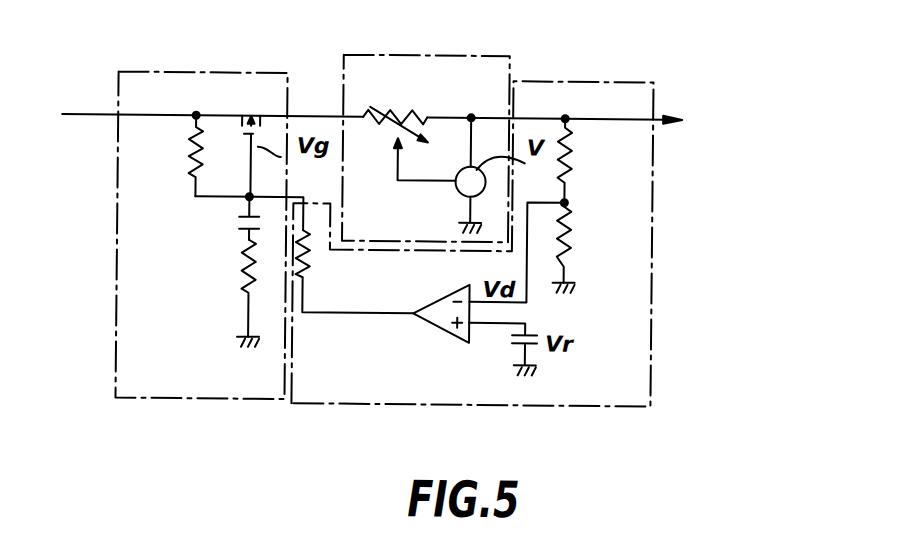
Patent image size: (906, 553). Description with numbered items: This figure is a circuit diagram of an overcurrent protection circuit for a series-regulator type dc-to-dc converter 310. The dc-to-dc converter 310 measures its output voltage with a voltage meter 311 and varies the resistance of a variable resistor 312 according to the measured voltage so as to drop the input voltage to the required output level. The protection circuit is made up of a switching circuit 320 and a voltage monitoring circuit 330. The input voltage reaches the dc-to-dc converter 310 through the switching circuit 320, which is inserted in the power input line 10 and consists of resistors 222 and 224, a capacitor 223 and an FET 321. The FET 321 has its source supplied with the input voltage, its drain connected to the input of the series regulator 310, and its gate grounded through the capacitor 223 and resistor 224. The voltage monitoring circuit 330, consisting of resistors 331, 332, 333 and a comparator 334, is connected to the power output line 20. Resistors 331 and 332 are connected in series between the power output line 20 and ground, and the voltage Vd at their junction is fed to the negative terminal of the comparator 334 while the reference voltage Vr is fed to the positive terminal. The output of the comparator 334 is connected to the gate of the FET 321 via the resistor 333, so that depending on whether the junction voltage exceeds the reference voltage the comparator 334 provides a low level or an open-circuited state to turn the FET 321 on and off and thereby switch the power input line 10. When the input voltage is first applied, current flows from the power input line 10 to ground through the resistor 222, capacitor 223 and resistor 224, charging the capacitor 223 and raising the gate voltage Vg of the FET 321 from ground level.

The power input line 10 is at (84, 115).
The power output line 20 is at (661, 115).
The resistor 222 is at (194, 167).
The capacitor 223 is at (240, 233).
The resistor 224 is at (240, 288).
The dc-to-dc converter 310 is at (341, 60).
The voltage meter 311 is at (466, 193).
The variable resistor 312 is at (419, 116).
The switching circuit 320 is at (136, 400).
The FET 321 is at (236, 115).
The voltage monitoring circuit 330 is at (652, 322).
The resistor 331 is at (576, 161).
The resistor 332 is at (575, 245).
The resistor 333 is at (310, 258).
The comparator 334 is at (424, 322).